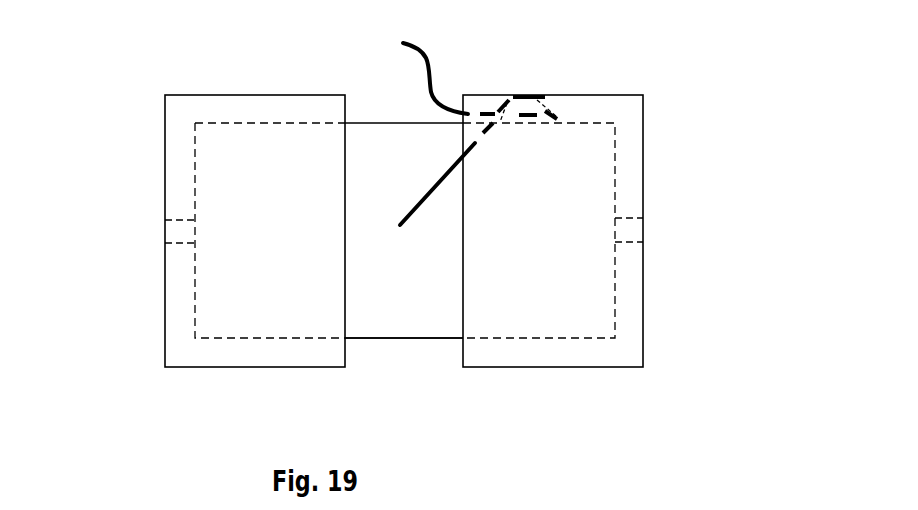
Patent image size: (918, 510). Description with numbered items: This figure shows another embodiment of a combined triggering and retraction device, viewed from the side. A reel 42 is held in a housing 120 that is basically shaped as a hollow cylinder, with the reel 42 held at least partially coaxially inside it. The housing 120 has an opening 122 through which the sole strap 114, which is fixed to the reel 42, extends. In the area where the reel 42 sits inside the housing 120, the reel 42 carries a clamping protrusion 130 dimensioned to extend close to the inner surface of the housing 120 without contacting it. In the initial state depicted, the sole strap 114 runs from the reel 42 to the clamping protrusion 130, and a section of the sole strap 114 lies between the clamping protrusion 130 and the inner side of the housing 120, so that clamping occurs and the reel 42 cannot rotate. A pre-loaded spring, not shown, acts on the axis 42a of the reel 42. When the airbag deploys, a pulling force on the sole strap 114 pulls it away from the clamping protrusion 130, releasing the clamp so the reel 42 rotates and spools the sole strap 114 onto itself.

The reel 42 is at (387, 177).
The axis 42a is at (175, 226).
The sole strap 114 is at (428, 57).
The housing 120 is at (587, 361).
The opening 122 is at (415, 355).
The clamping protrusion 130 is at (555, 97).